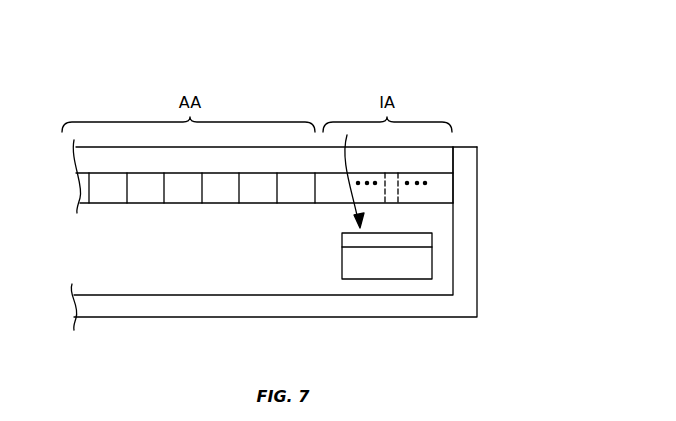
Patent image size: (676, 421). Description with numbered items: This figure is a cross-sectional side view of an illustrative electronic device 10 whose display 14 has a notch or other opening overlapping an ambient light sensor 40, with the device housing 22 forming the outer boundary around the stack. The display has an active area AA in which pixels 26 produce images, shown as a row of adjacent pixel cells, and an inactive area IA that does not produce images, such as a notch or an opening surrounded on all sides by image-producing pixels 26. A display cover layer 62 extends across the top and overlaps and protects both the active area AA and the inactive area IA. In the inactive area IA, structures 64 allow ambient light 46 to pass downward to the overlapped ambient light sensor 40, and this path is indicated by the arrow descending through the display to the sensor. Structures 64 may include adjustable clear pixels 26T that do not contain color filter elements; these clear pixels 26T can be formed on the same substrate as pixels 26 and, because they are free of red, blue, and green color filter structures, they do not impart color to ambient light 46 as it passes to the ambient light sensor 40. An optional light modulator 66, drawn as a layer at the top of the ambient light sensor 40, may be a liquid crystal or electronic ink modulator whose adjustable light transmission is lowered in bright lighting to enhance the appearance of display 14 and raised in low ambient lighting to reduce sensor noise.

The electronic device 10 is at (534, 260).
The display 14 is at (114, 84).
The housing 22 is at (236, 316).
The pixels 26 is at (107, 194).
The adjustable clear pixels 26T is at (418, 174).
The ambient light sensor 40 is at (348, 260).
The ambient light 46 is at (356, 185).
The display cover layer 62 is at (82, 157).
The structures 64 is at (443, 188).
The light modulator 66 is at (422, 240).